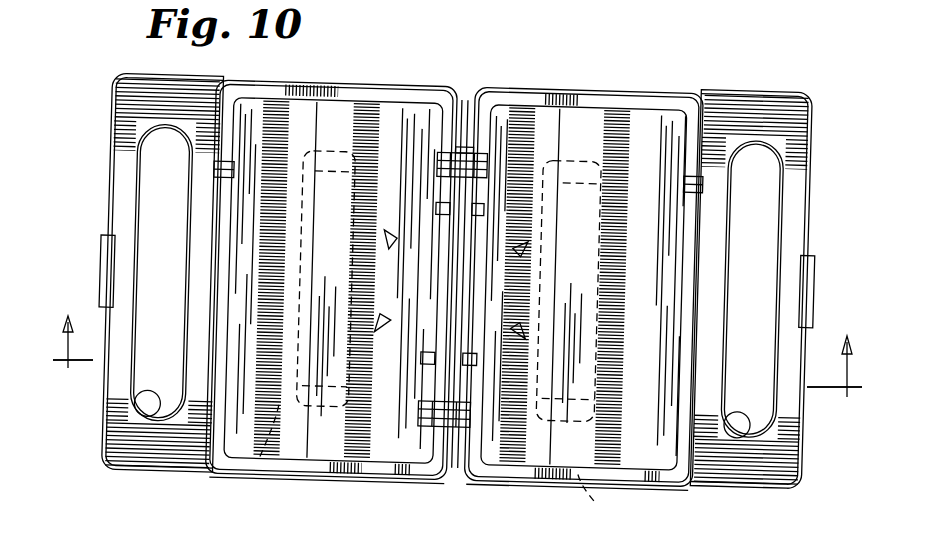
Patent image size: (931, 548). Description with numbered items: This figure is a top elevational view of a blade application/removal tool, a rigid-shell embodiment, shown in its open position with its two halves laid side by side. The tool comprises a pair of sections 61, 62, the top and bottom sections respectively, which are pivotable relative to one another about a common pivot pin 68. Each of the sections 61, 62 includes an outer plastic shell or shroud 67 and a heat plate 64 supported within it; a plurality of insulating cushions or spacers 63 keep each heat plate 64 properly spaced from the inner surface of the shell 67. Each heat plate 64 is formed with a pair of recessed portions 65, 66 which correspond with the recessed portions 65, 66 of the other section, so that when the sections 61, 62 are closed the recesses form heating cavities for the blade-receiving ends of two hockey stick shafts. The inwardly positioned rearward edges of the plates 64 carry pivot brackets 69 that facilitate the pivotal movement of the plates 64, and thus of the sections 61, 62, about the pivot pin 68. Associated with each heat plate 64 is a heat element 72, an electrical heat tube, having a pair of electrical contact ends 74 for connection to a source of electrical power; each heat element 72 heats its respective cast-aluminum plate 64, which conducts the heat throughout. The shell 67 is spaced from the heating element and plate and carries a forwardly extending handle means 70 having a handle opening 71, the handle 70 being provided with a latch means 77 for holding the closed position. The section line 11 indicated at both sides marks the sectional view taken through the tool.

The section 61 is at (247, 79).
The section 62 is at (542, 87).
The insulating cushions or spacers 63 is at (520, 66).
The heat plate 64 is at (257, 101).
The recessed portion 65 is at (387, 115).
The recessed portion 66 is at (316, 106).
The outer plastic shell or shroud 67 is at (292, 478).
The pivot pin 68 is at (458, 148).
The pivot brackets 69 is at (484, 299).
The handle means 70 is at (120, 103).
The handle opening 71 is at (107, 466).
The heat element 72 is at (222, 484).
The electrical contact ends 74 is at (290, 240).
The latch means 77 is at (439, 341).
The section line 11- 11 is at (846, 420).